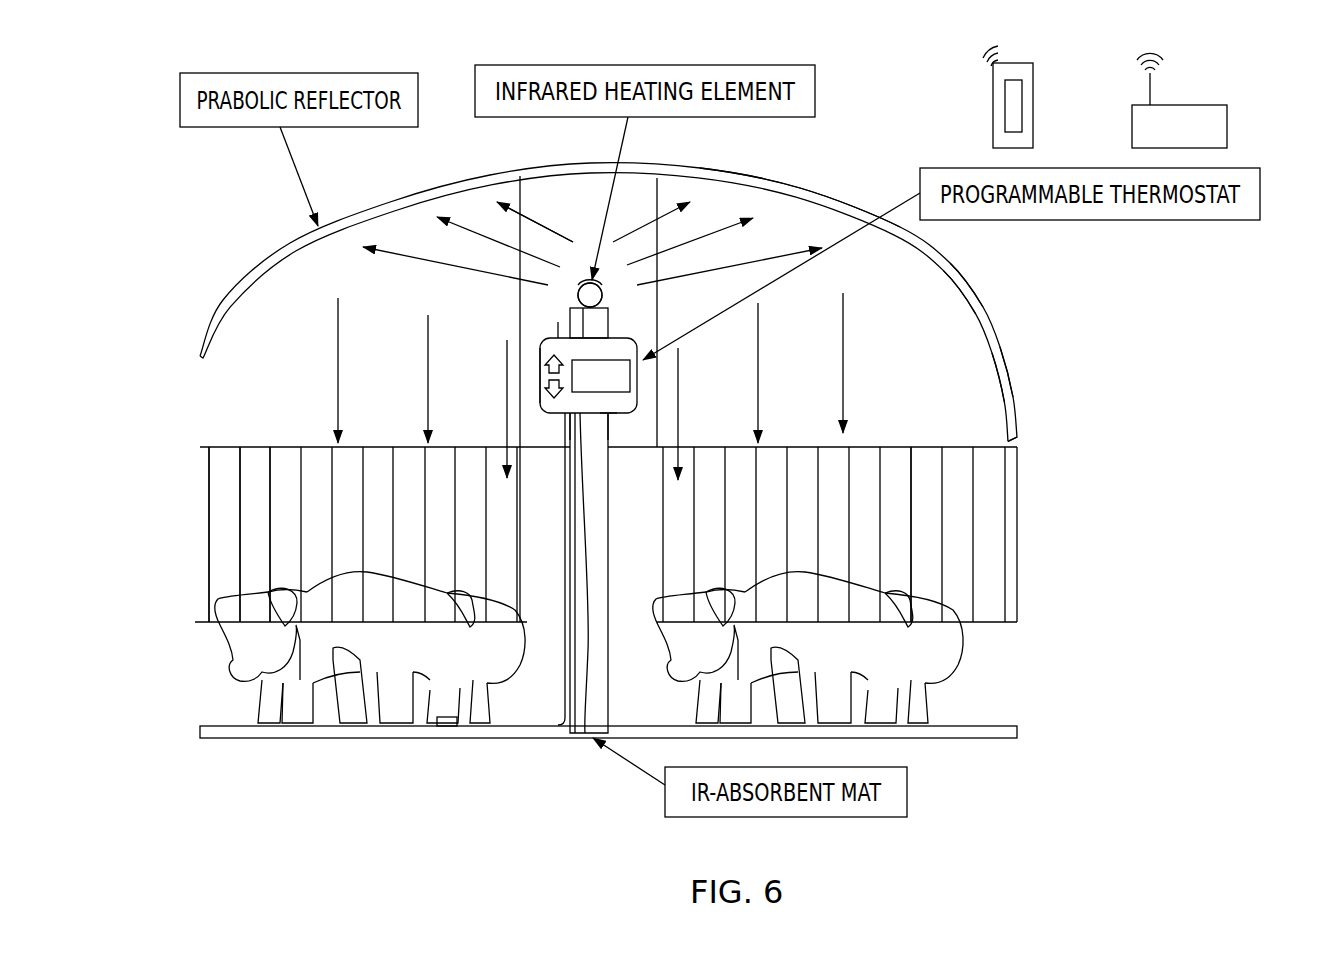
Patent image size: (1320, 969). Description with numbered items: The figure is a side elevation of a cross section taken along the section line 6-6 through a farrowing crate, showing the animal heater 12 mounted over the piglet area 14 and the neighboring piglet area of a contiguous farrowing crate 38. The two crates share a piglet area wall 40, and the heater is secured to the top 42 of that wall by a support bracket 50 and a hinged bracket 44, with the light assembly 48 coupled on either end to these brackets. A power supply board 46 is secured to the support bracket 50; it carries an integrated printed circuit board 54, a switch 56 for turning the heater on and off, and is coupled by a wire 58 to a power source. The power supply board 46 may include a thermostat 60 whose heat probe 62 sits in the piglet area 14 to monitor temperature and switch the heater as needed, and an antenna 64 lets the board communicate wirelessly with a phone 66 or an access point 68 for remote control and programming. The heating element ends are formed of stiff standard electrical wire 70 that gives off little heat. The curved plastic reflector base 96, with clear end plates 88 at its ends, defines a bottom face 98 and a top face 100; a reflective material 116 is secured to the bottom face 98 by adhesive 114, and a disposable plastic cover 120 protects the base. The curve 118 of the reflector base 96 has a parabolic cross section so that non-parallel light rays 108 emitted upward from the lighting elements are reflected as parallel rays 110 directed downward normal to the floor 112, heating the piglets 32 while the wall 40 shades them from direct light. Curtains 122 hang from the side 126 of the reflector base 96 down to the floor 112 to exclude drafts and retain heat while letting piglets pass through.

The section line 6 is at (265, 500).
The animal heater 12 is at (823, 137).
The piglet area 14 is at (383, 540).
The piglets 32 is at (355, 565).
The contiguous farrowing crate 38 is at (777, 540).
The piglet area wall 40 is at (608, 583).
The top of the piglet area wall 42 is at (603, 285).
The hinged bracket 44 is at (577, 297).
The power supply board 46 is at (620, 415).
The light assembly 48 is at (612, 278).
The support bracket 50 is at (565, 413).
The printed circuit board 54 is at (617, 413).
The switch 56 is at (540, 352).
The wire 58 is at (580, 548).
The thermostat 60 is at (640, 345).
The heat probe 62 is at (447, 726).
The antenna 64 is at (557, 332).
The phone 66 is at (1033, 105).
The access point 68 is at (1227, 130).
The standard electrical wire 70 is at (607, 327).
The end plates 88 is at (905, 453).
The curved plastic reflector base 96 is at (987, 343).
The bottom face 98 is at (998, 395).
The top face 100 is at (1013, 397).
The non-parallel light rays 108 is at (428, 268).
The parallel light rays 110 is at (328, 400).
The floor 112 is at (230, 726).
The adhesive 114 is at (953, 297).
The reflective material 116 is at (957, 317).
The curve 118 is at (573, 195).
The disposable plastic cover 120 is at (840, 207).
The curtains 122 is at (1017, 573).
The side of the reflector base 126 is at (1012, 440).